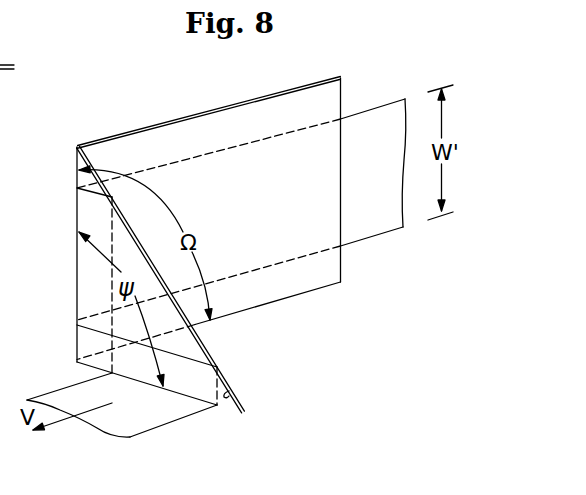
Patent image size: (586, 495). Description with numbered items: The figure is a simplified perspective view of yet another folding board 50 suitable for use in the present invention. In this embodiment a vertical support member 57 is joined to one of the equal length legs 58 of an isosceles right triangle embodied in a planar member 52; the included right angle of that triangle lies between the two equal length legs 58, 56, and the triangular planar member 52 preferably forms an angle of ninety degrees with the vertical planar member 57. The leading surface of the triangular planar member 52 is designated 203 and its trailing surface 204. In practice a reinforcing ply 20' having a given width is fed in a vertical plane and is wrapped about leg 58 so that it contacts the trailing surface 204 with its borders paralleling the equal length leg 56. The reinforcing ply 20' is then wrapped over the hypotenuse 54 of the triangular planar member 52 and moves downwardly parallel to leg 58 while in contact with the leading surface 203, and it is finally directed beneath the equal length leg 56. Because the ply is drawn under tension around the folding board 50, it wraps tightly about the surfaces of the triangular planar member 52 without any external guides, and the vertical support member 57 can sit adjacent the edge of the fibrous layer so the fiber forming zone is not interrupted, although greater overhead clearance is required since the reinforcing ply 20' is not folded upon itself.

The folding board 50 is at (170, 112).
The vertical support member 57 is at (226, 110).
The equal length leg 58 is at (77, 154).
The leading surface 203 is at (95, 164).
The reinforcing ply 20' is at (251, 189).
The triangular planar member 52 is at (245, 407).
The hypotenuse 54 is at (220, 376).
The trailing surface 204 is at (229, 391).
The equal length leg 56 is at (224, 410).